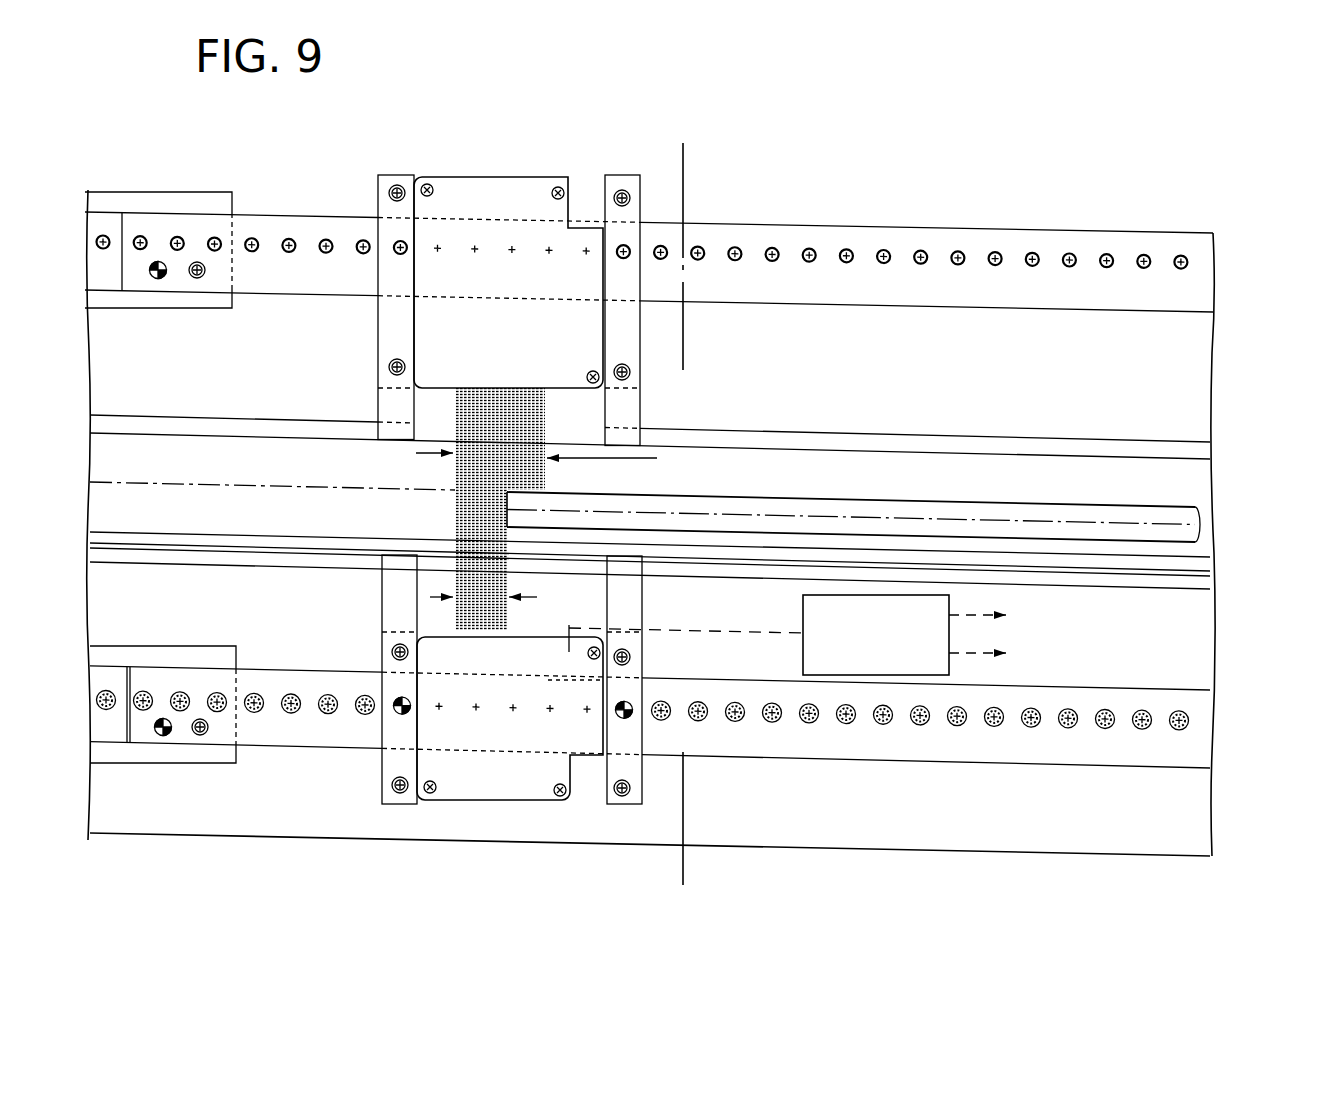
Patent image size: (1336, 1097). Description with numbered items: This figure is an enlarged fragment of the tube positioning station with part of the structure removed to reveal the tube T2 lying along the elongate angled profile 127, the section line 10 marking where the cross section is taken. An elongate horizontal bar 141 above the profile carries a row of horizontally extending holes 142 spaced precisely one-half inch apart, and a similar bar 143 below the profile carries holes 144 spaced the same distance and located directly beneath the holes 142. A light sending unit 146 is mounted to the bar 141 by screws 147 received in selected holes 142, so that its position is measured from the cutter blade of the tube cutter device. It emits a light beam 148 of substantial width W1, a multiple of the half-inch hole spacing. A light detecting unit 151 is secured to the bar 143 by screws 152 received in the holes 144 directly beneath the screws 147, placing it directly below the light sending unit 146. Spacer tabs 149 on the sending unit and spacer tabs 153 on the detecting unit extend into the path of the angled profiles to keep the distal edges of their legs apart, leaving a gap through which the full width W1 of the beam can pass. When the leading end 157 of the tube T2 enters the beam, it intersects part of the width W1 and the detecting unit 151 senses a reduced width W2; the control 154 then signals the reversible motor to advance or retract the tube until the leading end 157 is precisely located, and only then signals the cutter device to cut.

The section line 10 is at (683, 143).
The elongate angled profile 127 is at (780, 437).
The elongate horizontal bar 141 is at (1192, 243).
The holes 142 is at (1146, 254).
The elongate horizontally extending bar 143 is at (1203, 755).
The holes 144 is at (1150, 708).
The light sending unit 146 is at (486, 173).
The screws 147 is at (393, 242).
The light beam 148 is at (453, 470).
The spacer tabs 149 is at (386, 406).
The light detecting unit 151 is at (478, 806).
The screws 152 is at (395, 712).
The spacer tabs 153 is at (395, 600).
The control 154 is at (893, 675).
The leading end 157 is at (497, 504).
The width of light beam W1 is at (559, 472).
The reduced width of light W2 is at (505, 606).
The tube T2 is at (958, 496).